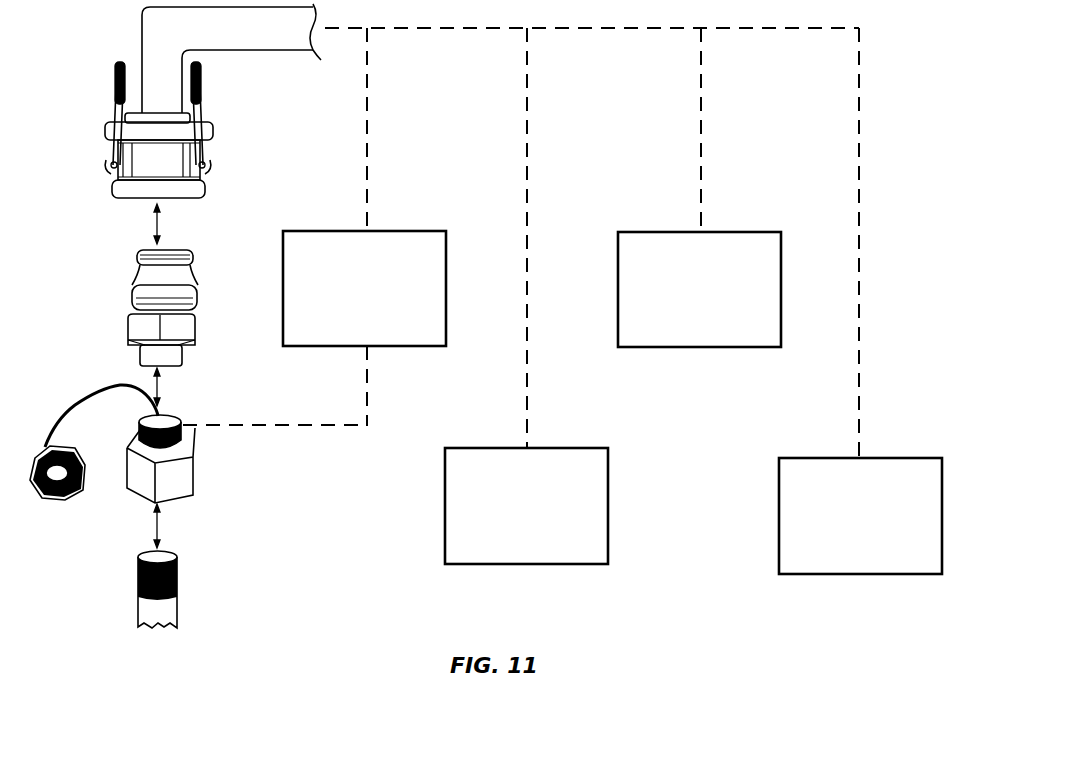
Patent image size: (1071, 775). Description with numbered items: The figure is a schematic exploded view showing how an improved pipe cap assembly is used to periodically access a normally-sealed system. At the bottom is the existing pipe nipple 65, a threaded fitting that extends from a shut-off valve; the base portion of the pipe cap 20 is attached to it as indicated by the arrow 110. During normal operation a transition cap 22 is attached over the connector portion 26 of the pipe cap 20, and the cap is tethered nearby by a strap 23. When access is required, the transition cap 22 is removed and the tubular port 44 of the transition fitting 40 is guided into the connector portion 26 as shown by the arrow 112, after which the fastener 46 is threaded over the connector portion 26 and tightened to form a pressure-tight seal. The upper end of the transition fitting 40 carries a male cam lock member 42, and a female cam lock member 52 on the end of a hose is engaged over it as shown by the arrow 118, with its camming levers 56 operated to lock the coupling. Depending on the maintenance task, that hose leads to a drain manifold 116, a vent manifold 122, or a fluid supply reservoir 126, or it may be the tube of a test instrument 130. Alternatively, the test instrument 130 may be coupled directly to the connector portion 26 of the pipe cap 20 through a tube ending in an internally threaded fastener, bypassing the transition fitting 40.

The pipe cap 20 is at (165, 455).
The transition cap 22 is at (62, 500).
The tether strap 23 is at (96, 392).
The connector portion 26 is at (135, 430).
The transition fitting 40 is at (163, 311).
The male cam lock member 42 is at (190, 252).
The tubular port 44 is at (183, 362).
The fastener 46 is at (190, 328).
The female cam lock member 52 is at (125, 197).
The camming levers 56 is at (110, 135).
The pipe nipple 65 is at (177, 602).
The arrow 110 is at (161, 525).
The arrow 112 is at (161, 390).
The drain manifold 116 is at (585, 447).
The arrow 118 is at (161, 225).
The vent manifold 122 is at (757, 231).
The fluid supply reservoir 126 is at (918, 457).
The test instrument 130 is at (425, 230).